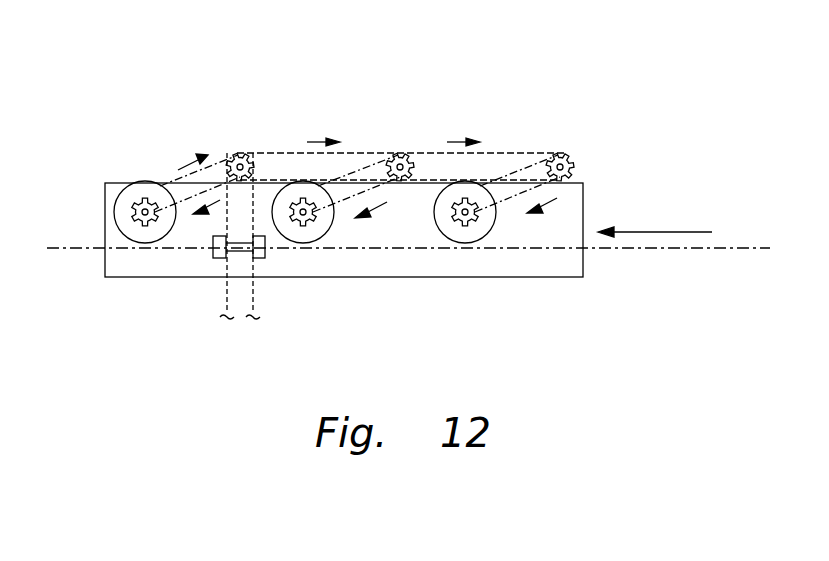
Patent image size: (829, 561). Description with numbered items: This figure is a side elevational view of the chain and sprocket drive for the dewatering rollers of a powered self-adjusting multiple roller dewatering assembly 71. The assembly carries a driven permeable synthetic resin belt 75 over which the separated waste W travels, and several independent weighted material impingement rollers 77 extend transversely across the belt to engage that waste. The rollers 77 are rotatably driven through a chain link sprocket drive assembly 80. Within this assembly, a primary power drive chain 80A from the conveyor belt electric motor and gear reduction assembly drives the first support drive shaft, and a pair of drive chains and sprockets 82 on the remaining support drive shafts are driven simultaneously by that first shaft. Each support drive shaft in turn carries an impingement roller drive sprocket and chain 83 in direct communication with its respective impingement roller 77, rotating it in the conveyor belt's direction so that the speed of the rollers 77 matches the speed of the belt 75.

The powered self-adjusting multiple roller dewatering assembly 71 is at (624, 178).
The driven permeable synthetic resin belt 75 is at (645, 250).
The weighted material impingement roller 77 is at (135, 187).
The chain link sprocket drive assembly 80 is at (419, 137).
The primary power drive chain 80A is at (225, 292).
The drive chains and sprockets 82 is at (265, 140).
The impingement roller drive sprocket and chain 83 is at (338, 187).
The separated waste W is at (667, 234).